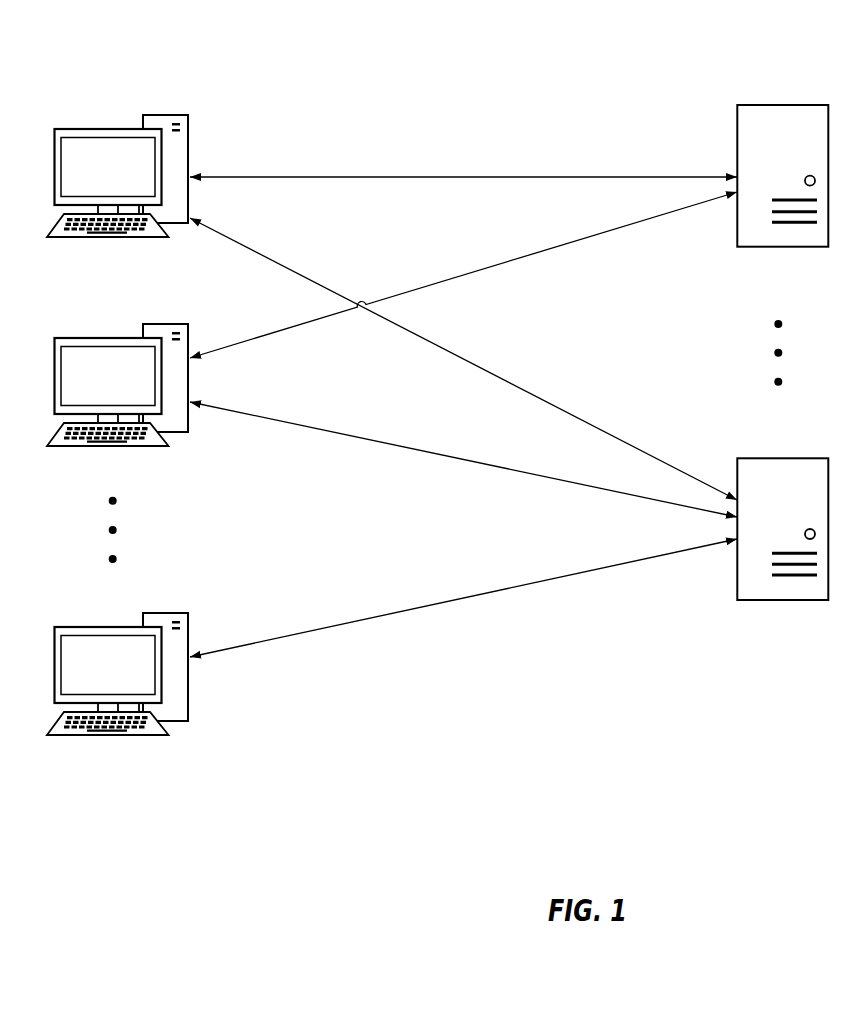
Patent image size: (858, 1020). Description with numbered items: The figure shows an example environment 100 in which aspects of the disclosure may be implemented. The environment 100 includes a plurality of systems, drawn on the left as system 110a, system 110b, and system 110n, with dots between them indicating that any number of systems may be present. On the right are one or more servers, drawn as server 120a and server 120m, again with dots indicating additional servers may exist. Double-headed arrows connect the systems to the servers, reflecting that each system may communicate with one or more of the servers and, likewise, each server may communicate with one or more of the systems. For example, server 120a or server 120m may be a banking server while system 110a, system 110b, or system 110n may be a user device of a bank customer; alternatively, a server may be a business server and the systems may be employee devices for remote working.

The environment 100 is at (216, 30).
The system 110a is at (143, 122).
The system 110b is at (143, 332).
The system 110n is at (143, 627).
The server 120a is at (738, 121).
The server 120m is at (755, 460).